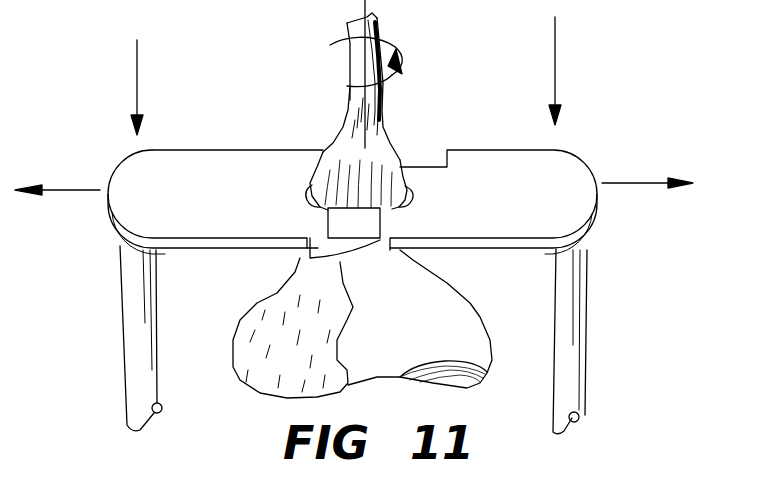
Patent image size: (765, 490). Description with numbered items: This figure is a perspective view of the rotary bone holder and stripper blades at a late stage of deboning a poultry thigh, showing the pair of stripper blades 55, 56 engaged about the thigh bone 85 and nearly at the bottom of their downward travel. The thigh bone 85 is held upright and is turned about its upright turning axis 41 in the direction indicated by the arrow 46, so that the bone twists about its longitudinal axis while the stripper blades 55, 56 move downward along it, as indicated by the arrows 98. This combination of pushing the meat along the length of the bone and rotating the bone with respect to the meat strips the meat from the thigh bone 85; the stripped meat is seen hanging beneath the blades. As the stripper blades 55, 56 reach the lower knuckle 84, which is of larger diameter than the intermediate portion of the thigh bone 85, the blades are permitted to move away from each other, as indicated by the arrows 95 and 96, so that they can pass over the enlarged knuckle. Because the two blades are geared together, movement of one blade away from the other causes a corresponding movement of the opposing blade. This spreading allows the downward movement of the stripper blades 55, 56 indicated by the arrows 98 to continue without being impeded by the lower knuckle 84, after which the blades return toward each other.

The upright turning axis 41 is at (368, 140).
The arrow 46 is at (318, 60).
The stripper blade 55 is at (233, 160).
The stripper blade 56 is at (517, 163).
The lower knuckle 84 is at (329, 153).
The thigh bone 85 is at (352, 94).
The arrow 95 is at (649, 183).
The arrow 96 is at (91, 189).
The arrows 98 is at (141, 74).